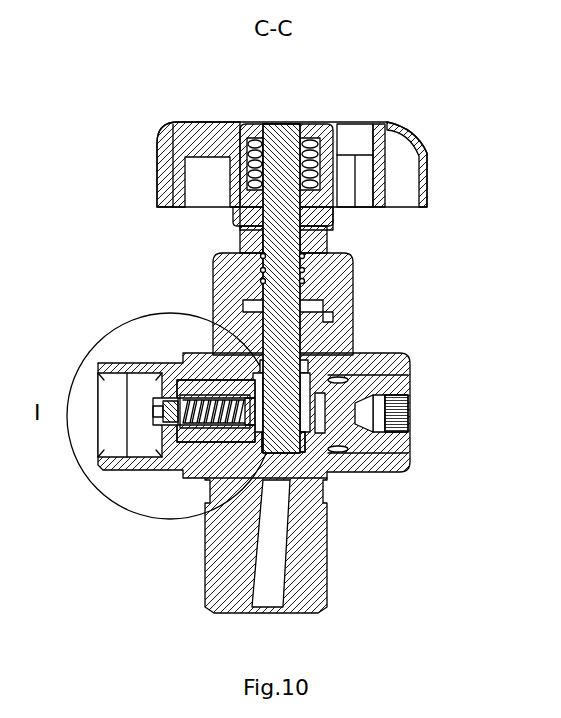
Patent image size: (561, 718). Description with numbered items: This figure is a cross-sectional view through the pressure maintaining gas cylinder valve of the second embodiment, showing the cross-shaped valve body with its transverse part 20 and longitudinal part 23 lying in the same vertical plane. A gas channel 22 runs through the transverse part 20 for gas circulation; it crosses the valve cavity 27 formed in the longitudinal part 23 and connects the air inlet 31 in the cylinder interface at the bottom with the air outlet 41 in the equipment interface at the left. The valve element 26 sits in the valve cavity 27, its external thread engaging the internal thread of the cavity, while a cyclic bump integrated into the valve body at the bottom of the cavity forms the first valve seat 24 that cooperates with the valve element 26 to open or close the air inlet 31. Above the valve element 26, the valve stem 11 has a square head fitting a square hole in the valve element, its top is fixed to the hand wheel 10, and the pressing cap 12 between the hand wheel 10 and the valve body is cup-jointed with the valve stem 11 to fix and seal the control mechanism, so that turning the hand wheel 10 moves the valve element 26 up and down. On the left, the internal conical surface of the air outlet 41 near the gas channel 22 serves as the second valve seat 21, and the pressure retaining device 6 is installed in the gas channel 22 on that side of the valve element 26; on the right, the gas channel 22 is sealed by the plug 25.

The pressure retaining device 6 is at (198, 365).
The hand wheel 10 is at (425, 162).
The valve stem 11 is at (310, 243).
The pressing cap 12 is at (327, 277).
The transverse part 20 is at (188, 380).
The second valve seat 21 is at (167, 433).
The gas channel 22 is at (190, 434).
The longitudinal part 23 is at (203, 547).
The first valve seat 24 is at (388, 473).
The plug 25 is at (388, 388).
The valve element 26 is at (362, 362).
The valve cavity 27 is at (333, 318).
The air inlet 31 is at (277, 537).
The air outlet 41 is at (113, 402).